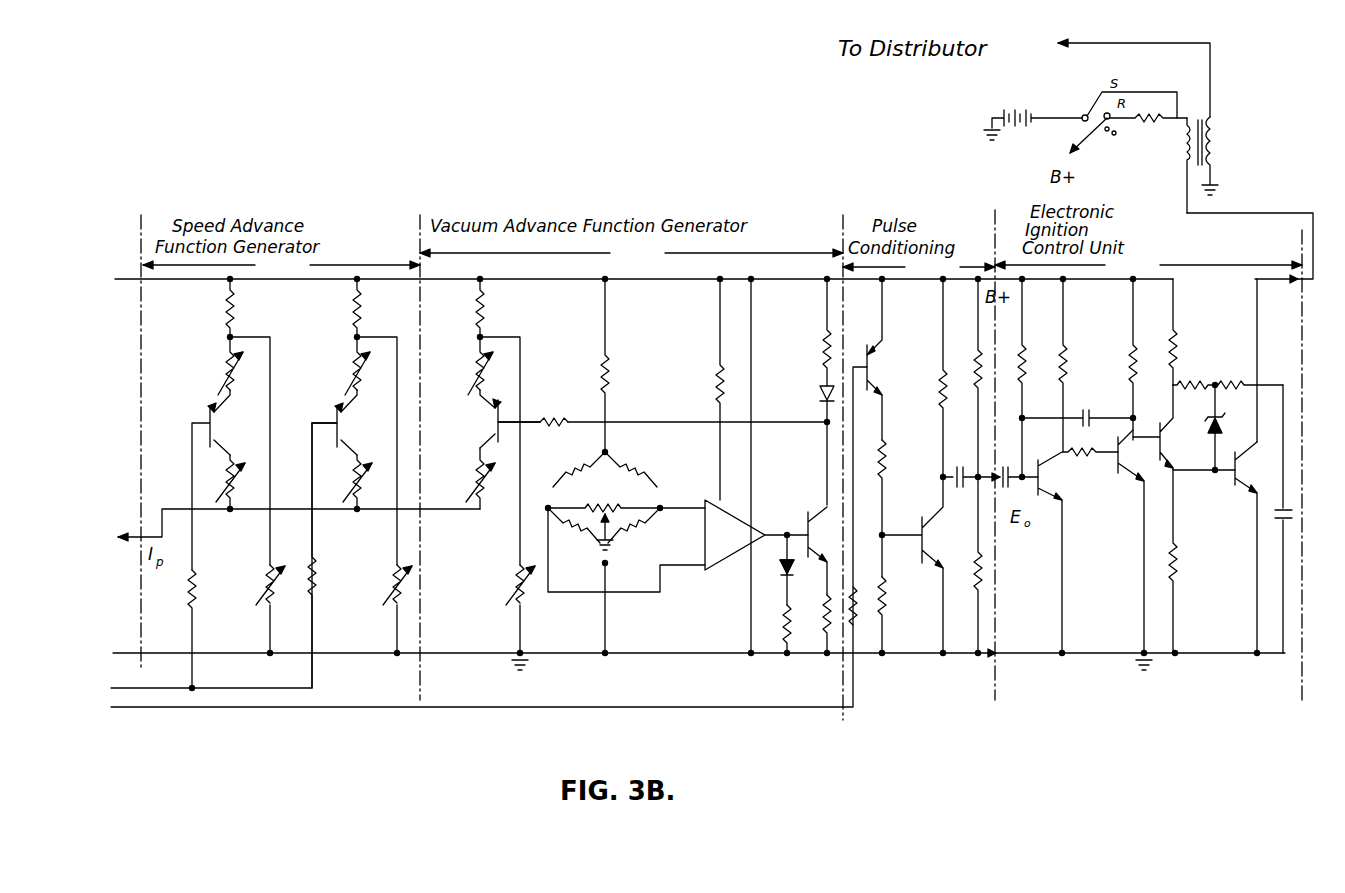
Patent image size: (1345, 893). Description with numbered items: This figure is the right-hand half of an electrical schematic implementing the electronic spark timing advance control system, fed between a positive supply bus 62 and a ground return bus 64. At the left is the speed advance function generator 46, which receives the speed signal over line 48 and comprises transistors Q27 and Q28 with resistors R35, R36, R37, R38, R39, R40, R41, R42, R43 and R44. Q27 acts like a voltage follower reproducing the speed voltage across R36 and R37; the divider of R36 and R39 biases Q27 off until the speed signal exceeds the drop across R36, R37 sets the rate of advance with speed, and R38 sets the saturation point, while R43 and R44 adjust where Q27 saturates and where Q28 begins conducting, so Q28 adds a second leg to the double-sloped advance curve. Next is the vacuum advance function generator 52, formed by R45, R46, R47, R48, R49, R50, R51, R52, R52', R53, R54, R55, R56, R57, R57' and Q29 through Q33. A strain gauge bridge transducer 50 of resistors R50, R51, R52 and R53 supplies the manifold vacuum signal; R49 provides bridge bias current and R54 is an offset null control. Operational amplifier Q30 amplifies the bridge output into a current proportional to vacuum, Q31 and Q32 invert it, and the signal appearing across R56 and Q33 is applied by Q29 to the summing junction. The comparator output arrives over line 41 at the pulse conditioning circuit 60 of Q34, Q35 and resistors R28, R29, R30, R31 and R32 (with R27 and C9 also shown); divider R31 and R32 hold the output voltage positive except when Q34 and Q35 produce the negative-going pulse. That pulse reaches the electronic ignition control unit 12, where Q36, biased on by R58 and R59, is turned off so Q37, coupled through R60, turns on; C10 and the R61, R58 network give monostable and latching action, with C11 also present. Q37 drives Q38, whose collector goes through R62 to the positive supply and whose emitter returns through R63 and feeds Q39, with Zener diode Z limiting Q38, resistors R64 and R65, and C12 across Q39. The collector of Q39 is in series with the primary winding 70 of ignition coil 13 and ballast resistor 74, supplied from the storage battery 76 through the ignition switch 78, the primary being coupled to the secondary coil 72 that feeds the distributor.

The resistor R36 is at (232, 316).
The emitter resistor R37 is at (218, 366).
The transistor Q27 is at (232, 480).
The resistor R38 is at (232, 504).
The resistor R35 is at (197, 588).
The resistor R39 is at (262, 578).
The resistor R41 is at (359, 314).
The resistor R42 is at (347, 366).
The transistor Q28 is at (346, 422).
The resistor R43 is at (359, 504).
The resistor R40 is at (318, 576).
The resistor R44 is at (402, 588).
The line 48 is at (152, 688).
The speed advance function generator 46 is at (216, 441).
The resistor R46 is at (488, 300).
The resistor R47 is at (470, 360).
The transistor Q29 is at (495, 419).
The resistor R48 is at (472, 470).
The resistor R49 is at (514, 586).
The offset null control R54 is at (605, 370).
The B+ bus 62 is at (630, 285).
The resistor R45 is at (560, 410).
The strain gauge bridge transducer 50 is at (618, 510).
The resistor R50 is at (574, 470).
The resistor R51 is at (634, 472).
The resistor R52 is at (574, 548).
The resistor R53 is at (654, 537).
The resistor R52' is at (604, 515).
The operational amplifier Q30 is at (756, 535).
The transistor Q31 is at (772, 566).
The resistor R57 is at (763, 648).
The resistor R55 is at (712, 385).
The resistor R56 is at (820, 362).
The diode Q33 is at (815, 394).
The transistor Q32 is at (829, 508).
The resistor R57' is at (804, 648).
The resistor R27 is at (858, 600).
The ground return bus 64 is at (572, 655).
The line 41 is at (585, 708).
The vacuum advance function generator 52 is at (633, 256).
The transistor Q34 is at (890, 359).
The resistor R28 is at (886, 455).
The resistor R29 is at (887, 595).
The resistor R30 is at (938, 398).
The transistor Q35 is at (923, 565).
The capacitor C9 is at (949, 482).
The resistor R31 is at (984, 350).
The resistor R32 is at (980, 575).
The capacitor C10 is at (1008, 462).
The pulse conditioning circuit 60 is at (926, 270).
The resistor R58 is at (1026, 360).
The resistor R59 is at (1066, 362).
The capacitor C11 is at (1090, 408).
The transistor Q36 is at (1060, 552).
The resistor R60 is at (1100, 452).
The transistor Q37 is at (1136, 550).
The resistor R61 is at (1137, 360).
The transistor Q38 is at (1184, 427).
The resistor R62 is at (1178, 340).
The resistor R64 is at (1192, 381).
The resistor R65 is at (1232, 381).
The Zener diode Z is at (1221, 427).
The transistor Q39 is at (1257, 547).
The resistor R63 is at (1178, 560).
The capacitor C12 is at (1293, 512).
The electronic contactless ignition control unit 12 is at (1126, 256).
The ignition coil 13 is at (1202, 111).
The ignition secondary coil 72 is at (1218, 130).
The primary winding 70 is at (1183, 145).
The ballast resistor 74 is at (1150, 124).
The vehicle ignition switch 78 is at (1123, 107).
The vehicle storage battery 76 is at (1032, 102).